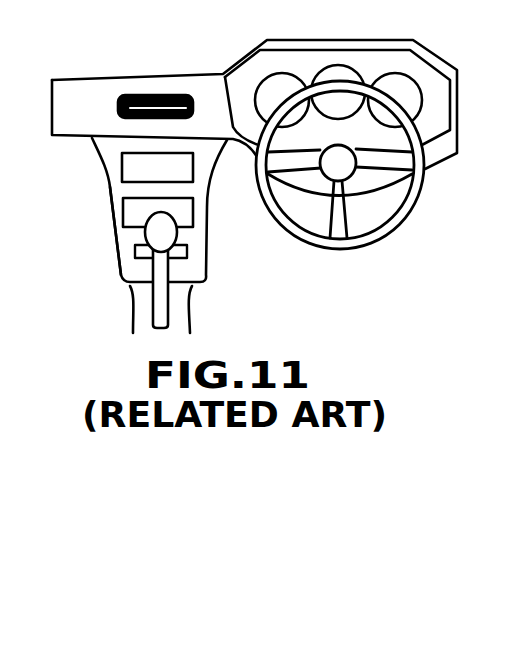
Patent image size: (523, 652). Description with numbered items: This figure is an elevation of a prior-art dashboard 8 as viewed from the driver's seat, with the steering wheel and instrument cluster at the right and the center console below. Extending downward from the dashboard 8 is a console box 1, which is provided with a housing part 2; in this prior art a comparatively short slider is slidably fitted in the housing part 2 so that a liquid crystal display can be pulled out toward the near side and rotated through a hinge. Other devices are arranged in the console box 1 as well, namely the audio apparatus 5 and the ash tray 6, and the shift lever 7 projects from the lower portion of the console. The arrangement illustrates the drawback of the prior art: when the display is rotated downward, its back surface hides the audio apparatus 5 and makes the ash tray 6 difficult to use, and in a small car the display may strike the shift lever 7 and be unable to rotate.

The console box 1 is at (117, 190).
The housing part 2 is at (127, 167).
The audio apparatus 5 is at (110, 213).
The ash tray 6 is at (183, 255).
The shift lever 7 is at (155, 238).
The dashboard 8 is at (82, 90).